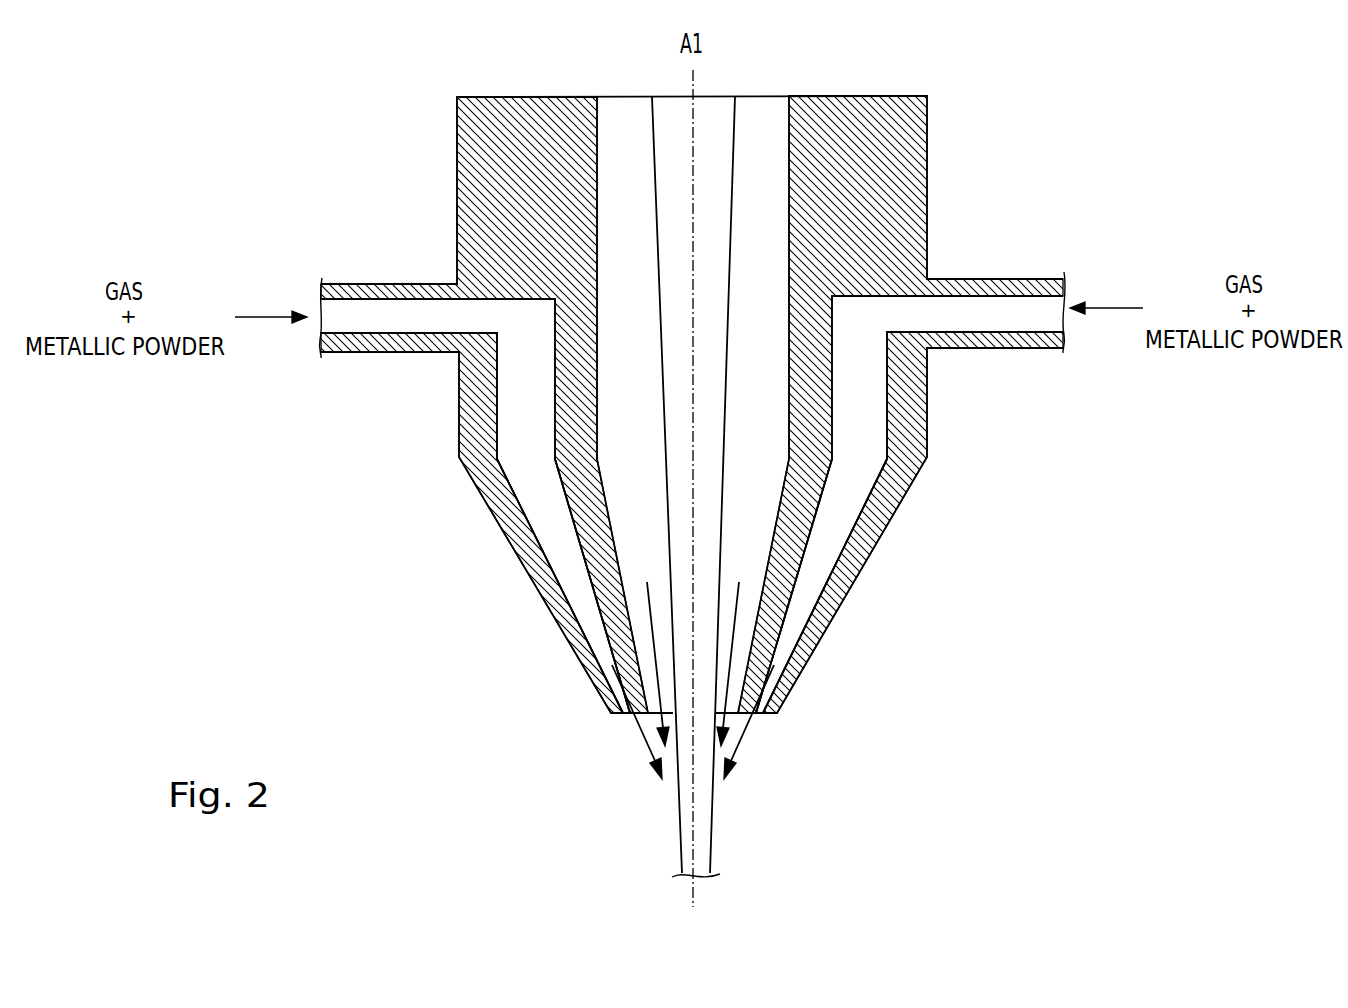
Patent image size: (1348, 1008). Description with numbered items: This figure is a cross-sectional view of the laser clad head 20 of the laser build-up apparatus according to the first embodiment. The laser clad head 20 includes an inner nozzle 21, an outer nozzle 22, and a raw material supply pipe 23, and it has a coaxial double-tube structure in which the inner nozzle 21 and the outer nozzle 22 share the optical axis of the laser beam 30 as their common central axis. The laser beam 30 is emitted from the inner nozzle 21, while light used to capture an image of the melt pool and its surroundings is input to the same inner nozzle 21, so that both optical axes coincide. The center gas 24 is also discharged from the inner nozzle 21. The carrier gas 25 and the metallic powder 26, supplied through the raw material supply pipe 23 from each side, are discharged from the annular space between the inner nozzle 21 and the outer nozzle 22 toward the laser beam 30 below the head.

The laser clad head 20 is at (692, 486).
The inner nozzle 21 is at (557, 395).
The outer nozzle 22 is at (478, 483).
The raw material supply pipe 23 is at (364, 283).
The center gas 24 is at (653, 630).
The carrier gas 25 is at (624, 680).
The metallic powder 26 is at (645, 738).
The laser beam 30 is at (712, 830).